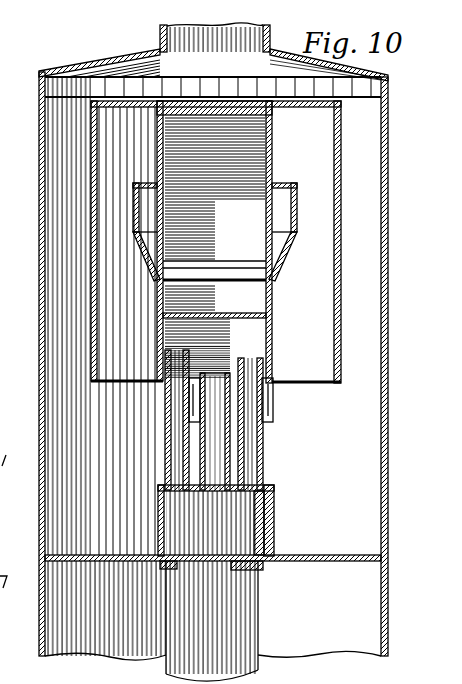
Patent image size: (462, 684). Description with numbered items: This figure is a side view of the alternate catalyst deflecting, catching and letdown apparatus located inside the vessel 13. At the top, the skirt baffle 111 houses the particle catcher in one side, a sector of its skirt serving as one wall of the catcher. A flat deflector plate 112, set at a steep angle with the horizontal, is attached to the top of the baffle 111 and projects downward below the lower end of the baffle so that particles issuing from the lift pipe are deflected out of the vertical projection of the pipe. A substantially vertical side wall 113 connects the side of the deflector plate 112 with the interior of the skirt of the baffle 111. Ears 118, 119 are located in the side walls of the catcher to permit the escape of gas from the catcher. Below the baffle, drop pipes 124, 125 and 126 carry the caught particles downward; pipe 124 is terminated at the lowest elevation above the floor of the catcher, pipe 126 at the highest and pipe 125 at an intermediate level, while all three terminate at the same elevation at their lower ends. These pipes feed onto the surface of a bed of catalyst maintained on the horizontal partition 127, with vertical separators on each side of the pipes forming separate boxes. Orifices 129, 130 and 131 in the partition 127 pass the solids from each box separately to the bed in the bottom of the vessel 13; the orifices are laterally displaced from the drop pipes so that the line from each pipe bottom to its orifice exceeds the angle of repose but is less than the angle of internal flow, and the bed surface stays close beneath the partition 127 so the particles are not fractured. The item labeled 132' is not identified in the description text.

The vessel 13 is at (39, 343).
The skirt baffle 111 is at (92, 253).
The deflector plate 112 is at (157, 323).
The side wall 113 is at (272, 320).
The ear 118 is at (133, 218).
The ear 119 is at (276, 183).
The drop pipe 124 is at (215, 446).
The drop pipe 125 is at (262, 462).
The drop pipe 126 is at (167, 440).
The horizontal partition 127 is at (82, 555).
The orifice 129 is at (213, 563).
The orifice 130 is at (252, 556).
The orifice 131 is at (165, 567).
The packing 132' is at (293, 522).